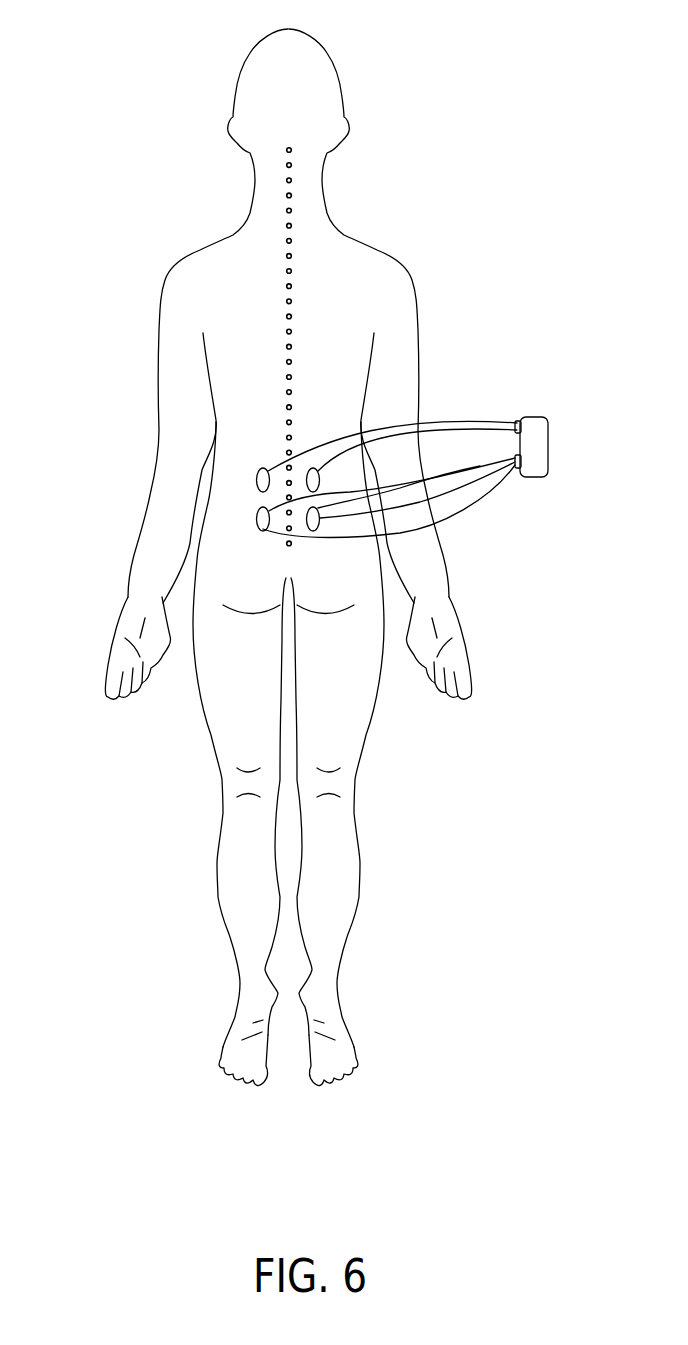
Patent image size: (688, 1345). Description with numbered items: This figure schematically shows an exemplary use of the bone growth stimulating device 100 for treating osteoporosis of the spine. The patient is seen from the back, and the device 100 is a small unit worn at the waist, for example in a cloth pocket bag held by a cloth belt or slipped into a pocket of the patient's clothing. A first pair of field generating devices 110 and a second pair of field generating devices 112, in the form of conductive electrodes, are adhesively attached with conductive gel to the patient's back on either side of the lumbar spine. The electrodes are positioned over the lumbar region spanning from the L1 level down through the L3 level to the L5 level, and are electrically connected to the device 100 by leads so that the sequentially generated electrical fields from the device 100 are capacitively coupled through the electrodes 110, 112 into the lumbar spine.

The bone growth stimulating device 100 is at (549, 431).
The first pair of field generating devices 110 is at (307, 471).
The second pair of field generating devices 112 is at (398, 488).
The L1 level L1 is at (287, 480).
The L3 level L3 is at (287, 514).
The L5 level L5 is at (287, 546).